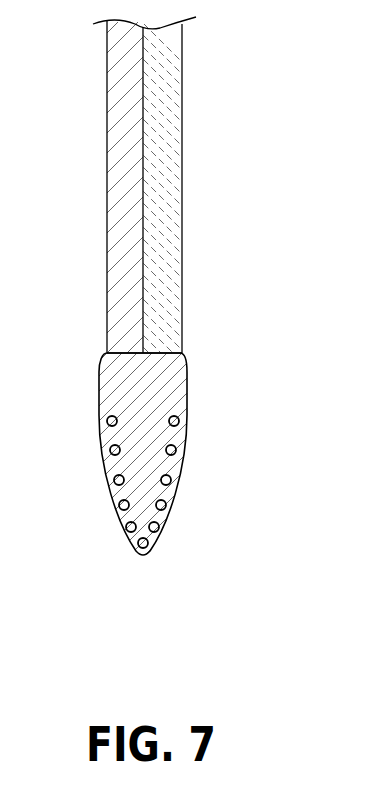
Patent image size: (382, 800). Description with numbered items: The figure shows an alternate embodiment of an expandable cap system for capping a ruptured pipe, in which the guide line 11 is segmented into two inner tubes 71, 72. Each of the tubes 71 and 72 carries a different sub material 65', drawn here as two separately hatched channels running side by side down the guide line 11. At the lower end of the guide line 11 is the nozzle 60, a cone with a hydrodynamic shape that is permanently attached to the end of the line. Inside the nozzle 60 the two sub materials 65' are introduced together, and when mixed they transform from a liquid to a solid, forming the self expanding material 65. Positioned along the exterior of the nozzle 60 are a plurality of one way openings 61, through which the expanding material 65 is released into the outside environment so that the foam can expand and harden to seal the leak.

The guide line 11 is at (160, 342).
The nozzle 60 is at (137, 442).
The one way openings 61 is at (173, 456).
The self expanding material 65 is at (160, 442).
The sub materials 65' is at (154, 250).
The inner tube 71 is at (112, 131).
The inner tube 72 is at (148, 131).